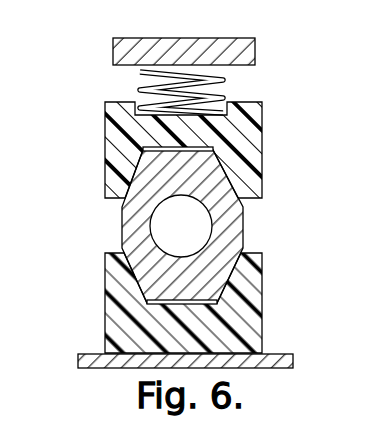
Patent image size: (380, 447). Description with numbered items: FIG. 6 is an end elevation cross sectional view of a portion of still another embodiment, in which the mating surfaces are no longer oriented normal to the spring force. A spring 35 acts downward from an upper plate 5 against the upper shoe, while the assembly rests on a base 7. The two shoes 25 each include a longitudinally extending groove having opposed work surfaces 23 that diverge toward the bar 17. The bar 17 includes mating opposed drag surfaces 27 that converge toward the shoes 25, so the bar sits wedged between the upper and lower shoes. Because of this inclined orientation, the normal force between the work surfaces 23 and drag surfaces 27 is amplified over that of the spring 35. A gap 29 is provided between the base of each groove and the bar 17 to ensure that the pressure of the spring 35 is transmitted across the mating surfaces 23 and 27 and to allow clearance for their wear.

The upper pressure plate 5 is at (196, 38).
The base plate 7 is at (293, 358).
The bar 17 is at (243, 219).
The work surfaces 23 is at (130, 170).
The shoes 25 is at (105, 133).
The drag surfaces 27 is at (123, 217).
The gap 29 is at (262, 142).
The spring 35 is at (223, 82).